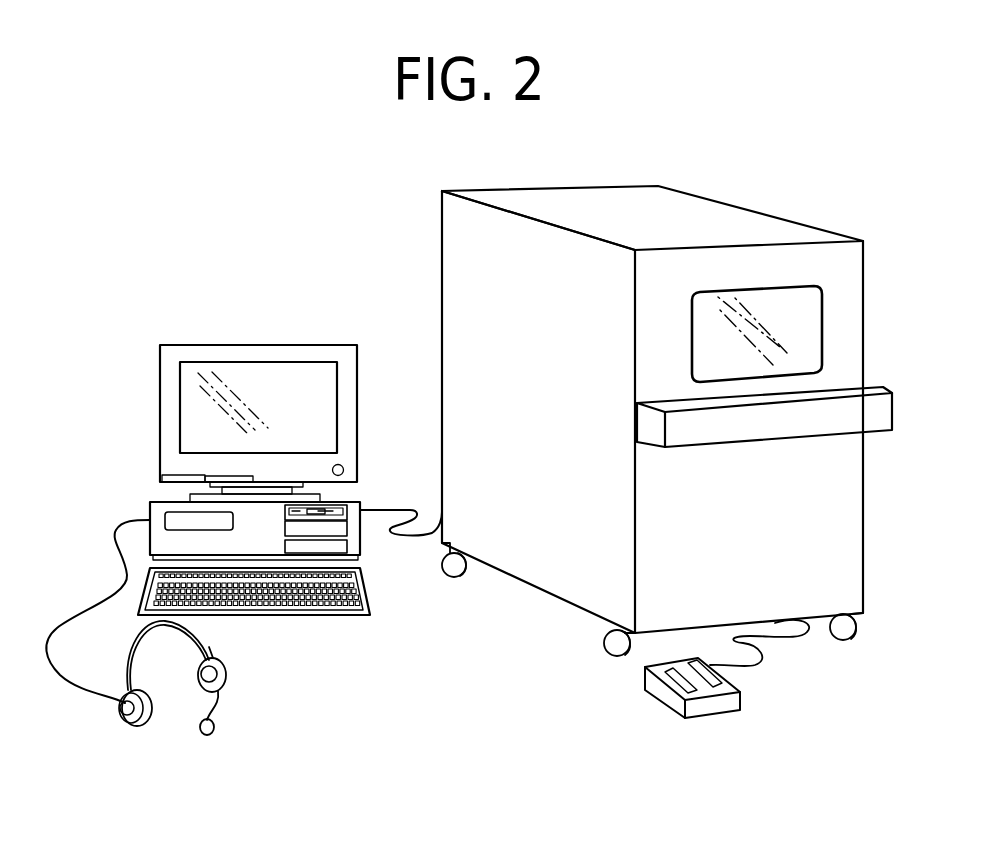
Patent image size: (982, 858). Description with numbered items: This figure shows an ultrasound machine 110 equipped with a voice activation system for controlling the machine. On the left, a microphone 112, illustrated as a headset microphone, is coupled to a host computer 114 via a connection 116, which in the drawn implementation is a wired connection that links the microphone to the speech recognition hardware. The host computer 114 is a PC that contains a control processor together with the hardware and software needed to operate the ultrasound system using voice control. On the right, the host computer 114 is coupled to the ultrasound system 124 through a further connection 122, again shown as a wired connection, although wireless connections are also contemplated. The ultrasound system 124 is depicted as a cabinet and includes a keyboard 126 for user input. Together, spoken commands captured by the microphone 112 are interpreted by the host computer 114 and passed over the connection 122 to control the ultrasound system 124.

The ultrasound machine 110 is at (318, 280).
The microphone 112 is at (227, 673).
The host computer 114 is at (351, 502).
The connection 116 is at (110, 548).
The connection 122 is at (405, 536).
The ultrasound system 124 is at (473, 317).
The keyboard 126 is at (672, 405).